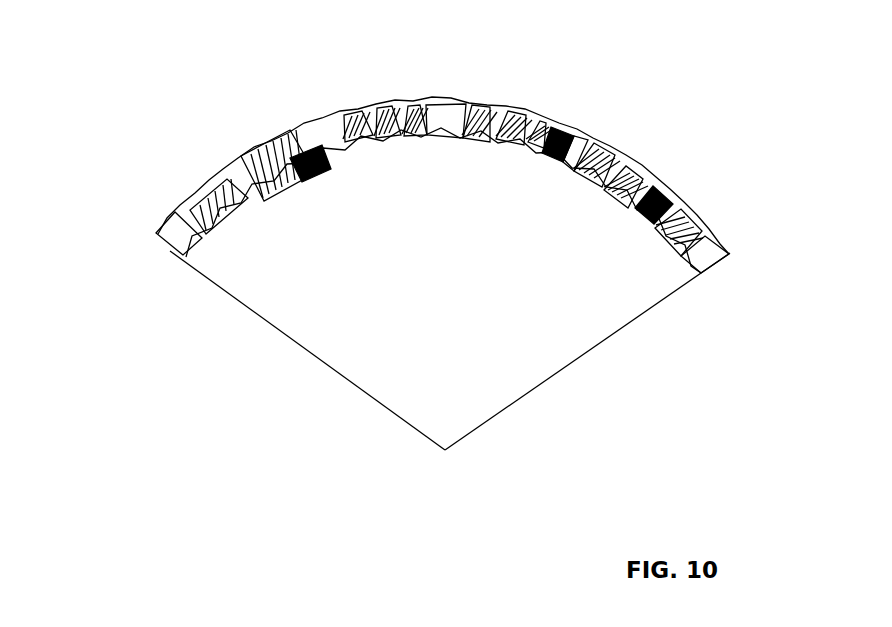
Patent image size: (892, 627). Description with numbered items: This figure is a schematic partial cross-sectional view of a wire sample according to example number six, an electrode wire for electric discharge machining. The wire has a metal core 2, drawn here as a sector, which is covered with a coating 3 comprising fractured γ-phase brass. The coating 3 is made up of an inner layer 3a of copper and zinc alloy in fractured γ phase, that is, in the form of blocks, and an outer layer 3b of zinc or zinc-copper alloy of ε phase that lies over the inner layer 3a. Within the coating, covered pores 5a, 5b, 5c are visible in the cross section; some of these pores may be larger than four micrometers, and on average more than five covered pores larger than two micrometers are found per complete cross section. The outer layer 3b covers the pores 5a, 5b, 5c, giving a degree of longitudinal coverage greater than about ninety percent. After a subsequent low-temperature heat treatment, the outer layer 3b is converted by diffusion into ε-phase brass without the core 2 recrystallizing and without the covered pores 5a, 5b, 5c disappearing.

The metal core 2 is at (395, 297).
The coating 3 is at (165, 250).
The inner layer 3a is at (370, 122).
The outer layer 3b is at (440, 113).
The covered pore 5a is at (307, 142).
The covered pore 5b is at (578, 147).
The covered pore 5c is at (663, 203).